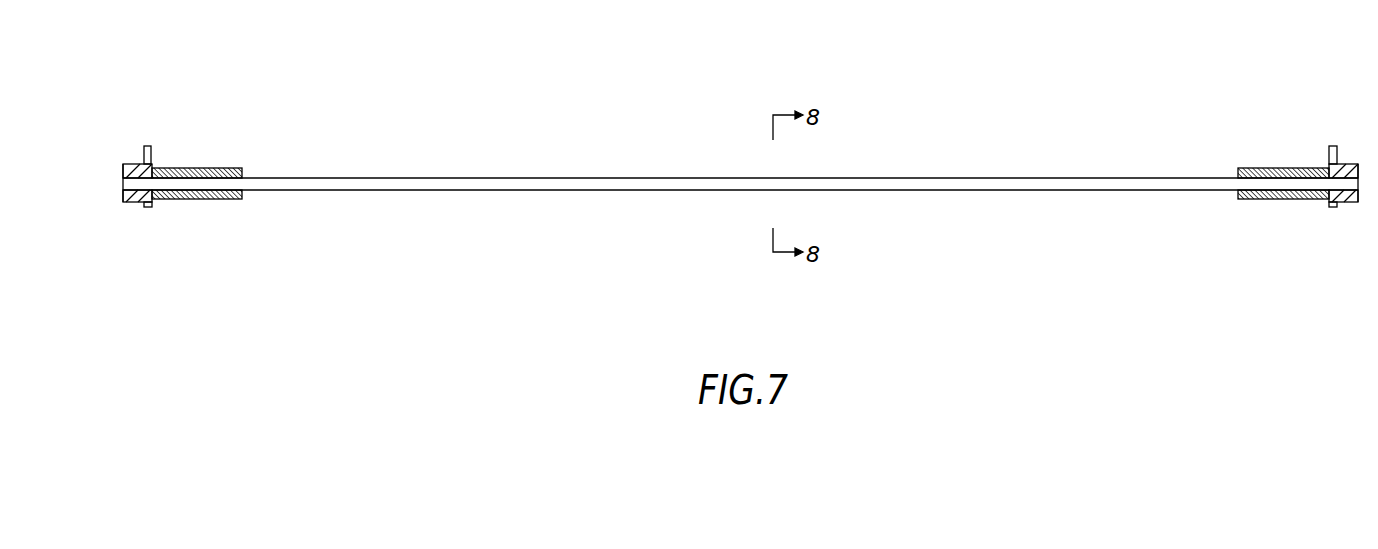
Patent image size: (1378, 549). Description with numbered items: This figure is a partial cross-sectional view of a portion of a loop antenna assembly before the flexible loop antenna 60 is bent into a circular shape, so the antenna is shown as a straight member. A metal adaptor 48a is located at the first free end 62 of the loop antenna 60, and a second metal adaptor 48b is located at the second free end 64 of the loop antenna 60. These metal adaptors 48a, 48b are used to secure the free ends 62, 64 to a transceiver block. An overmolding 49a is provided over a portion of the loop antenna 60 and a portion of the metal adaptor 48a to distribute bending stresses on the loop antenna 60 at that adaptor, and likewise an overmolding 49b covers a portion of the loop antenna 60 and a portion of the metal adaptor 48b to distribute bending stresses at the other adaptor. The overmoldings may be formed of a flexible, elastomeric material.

The adaptor 48a is at (150, 165).
The adaptor 48b is at (1329, 165).
The overmolding 49a is at (212, 199).
The overmolding 49b is at (1253, 199).
The flexible loop antenna 60 is at (485, 178).
The first free end 62 is at (124, 202).
The second free end 64 is at (1359, 203).